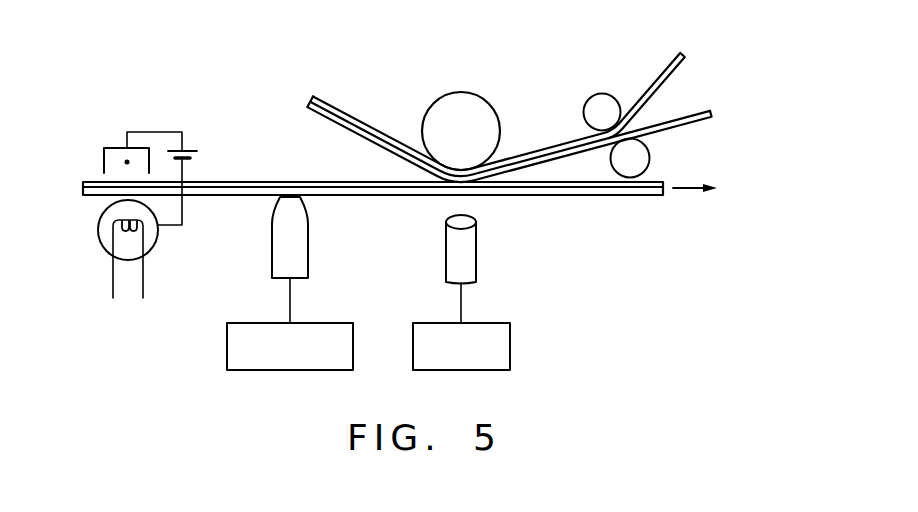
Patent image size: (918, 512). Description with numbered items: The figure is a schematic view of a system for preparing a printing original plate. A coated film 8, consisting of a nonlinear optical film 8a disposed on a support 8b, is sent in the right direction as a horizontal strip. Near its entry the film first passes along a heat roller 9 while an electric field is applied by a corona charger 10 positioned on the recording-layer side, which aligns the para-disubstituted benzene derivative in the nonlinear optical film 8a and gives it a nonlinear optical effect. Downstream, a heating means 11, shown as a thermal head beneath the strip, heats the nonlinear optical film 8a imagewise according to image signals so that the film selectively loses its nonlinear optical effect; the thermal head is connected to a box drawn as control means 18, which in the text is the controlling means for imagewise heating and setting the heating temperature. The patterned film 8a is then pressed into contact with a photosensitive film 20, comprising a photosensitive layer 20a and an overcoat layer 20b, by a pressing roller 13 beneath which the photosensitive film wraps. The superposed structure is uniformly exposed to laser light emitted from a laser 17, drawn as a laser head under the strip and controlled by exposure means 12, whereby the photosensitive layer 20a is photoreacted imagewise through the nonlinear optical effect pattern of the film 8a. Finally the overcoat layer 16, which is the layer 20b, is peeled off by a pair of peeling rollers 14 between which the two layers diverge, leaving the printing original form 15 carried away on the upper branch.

The coated film 8 is at (430, 203).
The nonlinear optical film 8a is at (660, 178).
The support 8b is at (408, 224).
The heat roller 9 is at (157, 246).
The corona charger 10 is at (113, 147).
The heating means 11 is at (298, 248).
The exposure means 12 is at (470, 248).
The pressing roller 13 is at (465, 105).
The peeling rollers 14 is at (600, 100).
The printing original form 15 is at (686, 63).
The overcoat layer 16 is at (703, 105).
The laser 17 is at (487, 323).
The control means 18 is at (327, 323).
The photosensitive film 20 is at (452, 112).
The photosensitive layer 20a is at (326, 97).
The overcoat layer 20b is at (481, 140).